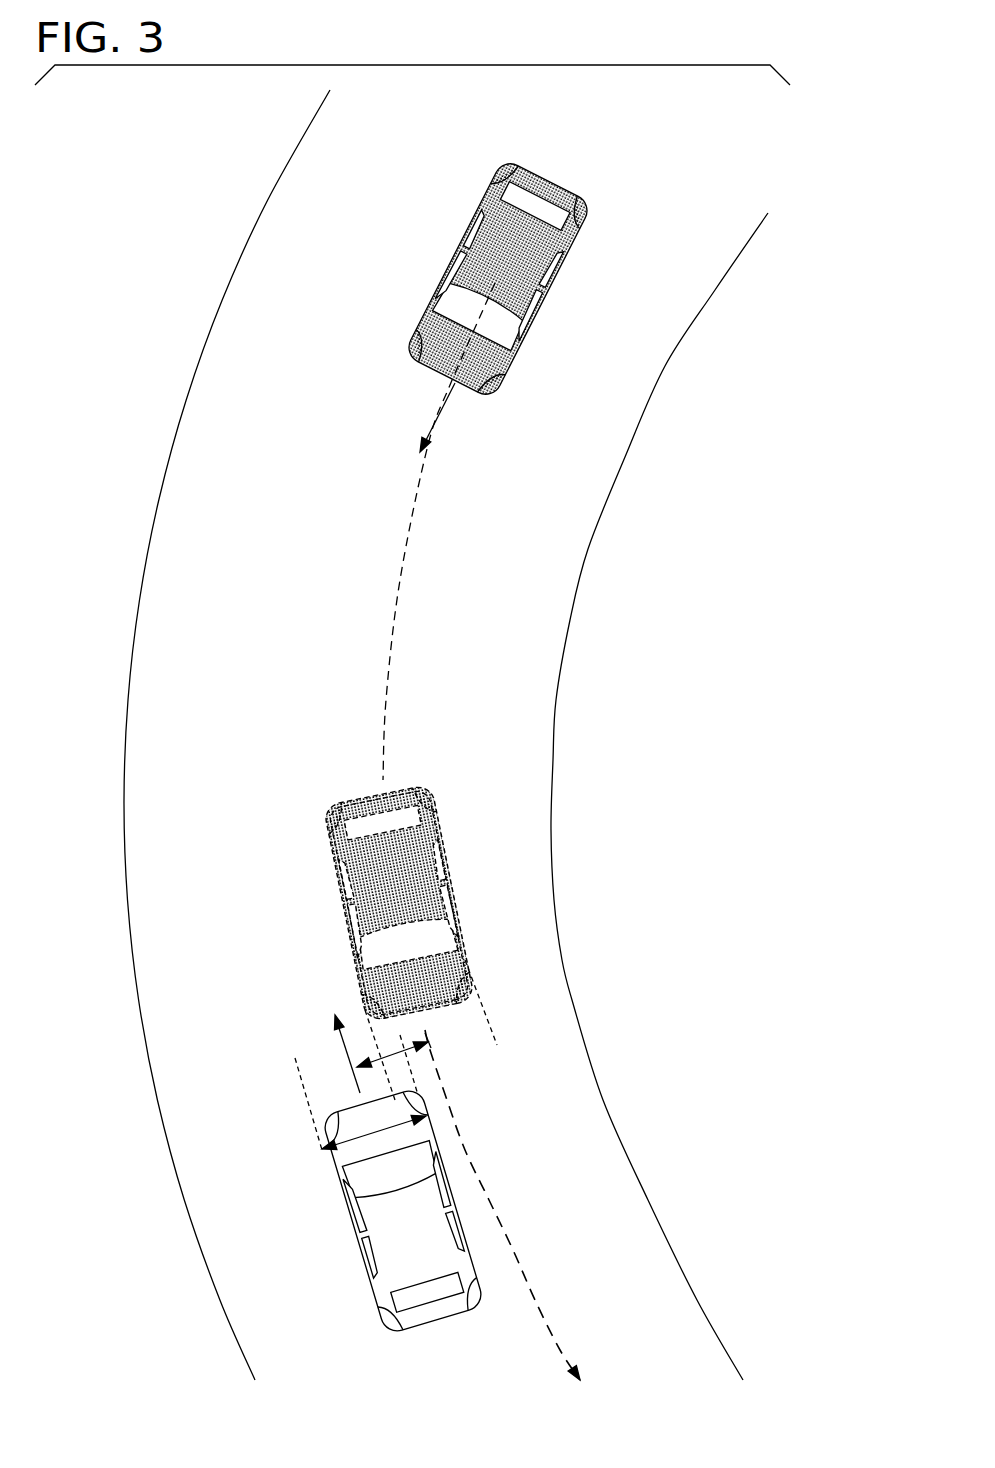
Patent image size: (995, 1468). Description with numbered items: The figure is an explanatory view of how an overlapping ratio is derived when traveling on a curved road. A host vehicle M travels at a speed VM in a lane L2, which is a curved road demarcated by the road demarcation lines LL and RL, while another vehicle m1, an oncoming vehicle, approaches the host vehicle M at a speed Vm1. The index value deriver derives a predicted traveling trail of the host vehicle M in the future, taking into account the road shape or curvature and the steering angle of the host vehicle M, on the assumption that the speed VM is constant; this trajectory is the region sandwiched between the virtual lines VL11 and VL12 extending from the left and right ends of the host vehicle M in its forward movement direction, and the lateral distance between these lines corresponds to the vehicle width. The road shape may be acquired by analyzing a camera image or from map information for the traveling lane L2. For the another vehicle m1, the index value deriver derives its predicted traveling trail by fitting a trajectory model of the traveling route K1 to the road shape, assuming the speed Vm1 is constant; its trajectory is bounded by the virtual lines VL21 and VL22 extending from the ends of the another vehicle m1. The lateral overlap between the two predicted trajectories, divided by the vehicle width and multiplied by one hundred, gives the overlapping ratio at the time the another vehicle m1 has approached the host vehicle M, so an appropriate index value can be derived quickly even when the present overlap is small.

The another vehicle m1 is at (546, 302).
The speed of the another vehicle Vm1 is at (437, 410).
The road demarcation line LL is at (126, 707).
The road demarcation line RL is at (556, 707).
The virtual line VL22 is at (362, 1038).
The virtual line VL21 is at (488, 1022).
The speed of the host vehicle VM is at (340, 1044).
The virtual line VL11 is at (301, 1092).
The virtual line VL12 is at (417, 1083).
The host vehicle M is at (345, 1223).
The traveling route K1 is at (516, 1258).
The lane L2 is at (490, 1380).